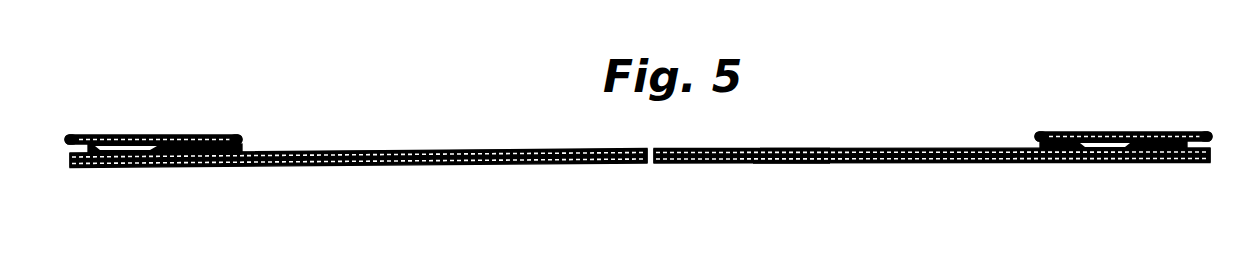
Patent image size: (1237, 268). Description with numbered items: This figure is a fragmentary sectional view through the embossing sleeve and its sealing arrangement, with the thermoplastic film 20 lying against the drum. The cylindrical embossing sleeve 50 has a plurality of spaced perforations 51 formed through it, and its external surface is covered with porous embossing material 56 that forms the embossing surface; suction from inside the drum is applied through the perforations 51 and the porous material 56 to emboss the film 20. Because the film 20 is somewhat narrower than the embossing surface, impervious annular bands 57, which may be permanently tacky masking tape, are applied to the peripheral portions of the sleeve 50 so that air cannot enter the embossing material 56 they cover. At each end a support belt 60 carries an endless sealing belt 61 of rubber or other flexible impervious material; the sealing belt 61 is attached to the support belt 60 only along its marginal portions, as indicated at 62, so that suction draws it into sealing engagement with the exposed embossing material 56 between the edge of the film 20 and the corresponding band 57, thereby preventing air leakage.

The thermoplastic film 20 is at (520, 150).
The cylindrical embossing sleeve 50 is at (684, 164).
The perforations 51 is at (830, 163).
The porous embossing material 56 is at (786, 150).
The impervious annular bands 57 is at (70, 154).
The endless support belts 60 is at (131, 136).
The sealing belt 61 is at (174, 147).
The marginal attachment of sealing belt to support belt 62 is at (79, 136).